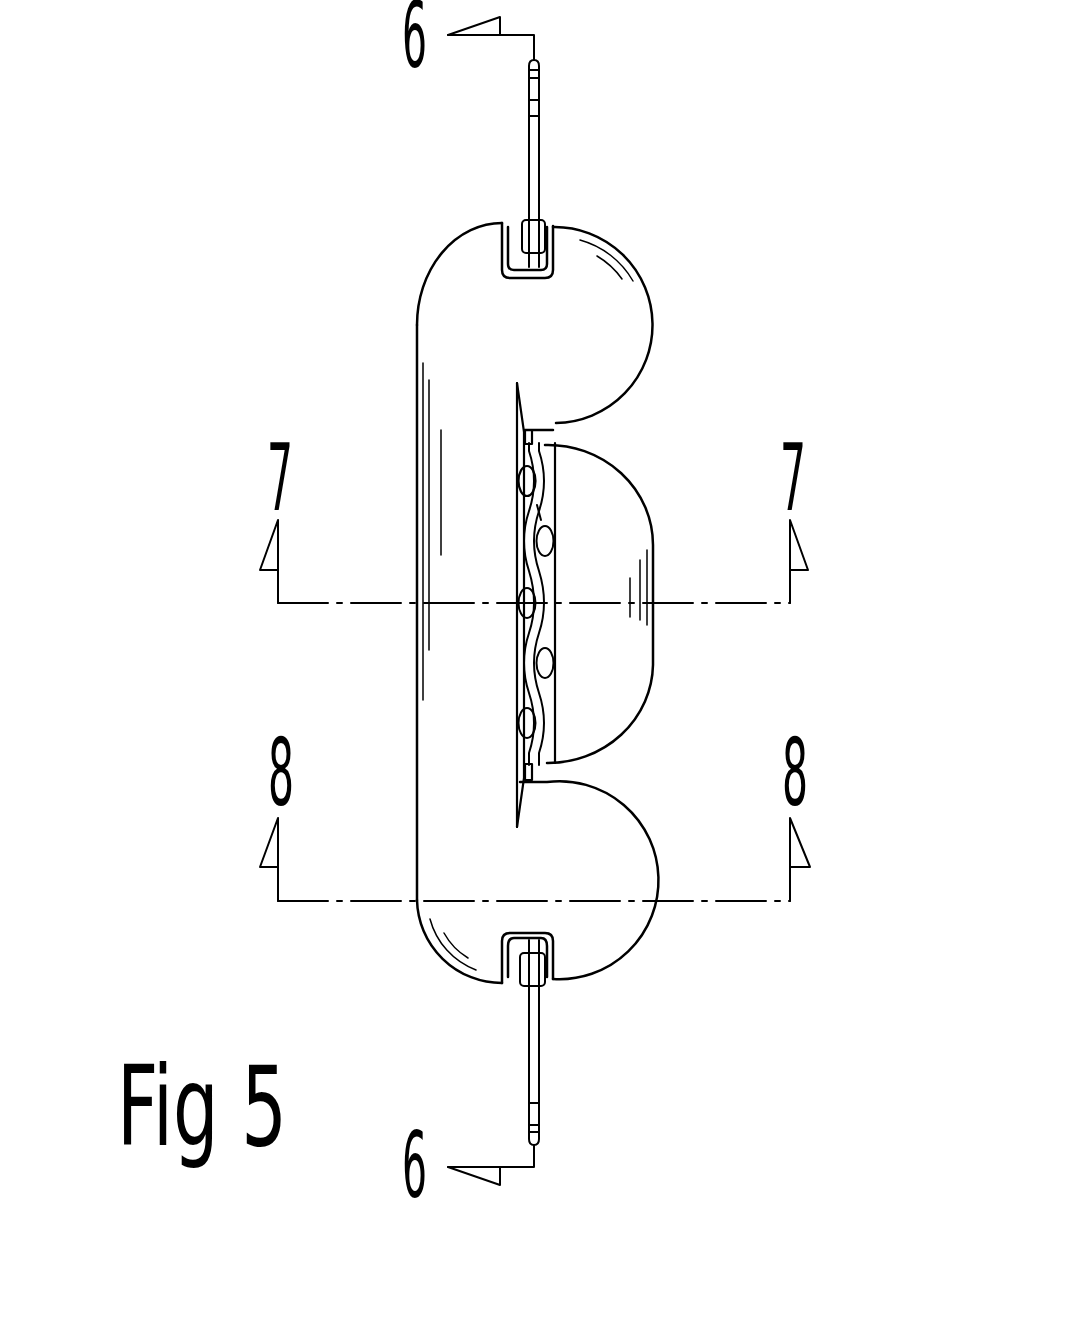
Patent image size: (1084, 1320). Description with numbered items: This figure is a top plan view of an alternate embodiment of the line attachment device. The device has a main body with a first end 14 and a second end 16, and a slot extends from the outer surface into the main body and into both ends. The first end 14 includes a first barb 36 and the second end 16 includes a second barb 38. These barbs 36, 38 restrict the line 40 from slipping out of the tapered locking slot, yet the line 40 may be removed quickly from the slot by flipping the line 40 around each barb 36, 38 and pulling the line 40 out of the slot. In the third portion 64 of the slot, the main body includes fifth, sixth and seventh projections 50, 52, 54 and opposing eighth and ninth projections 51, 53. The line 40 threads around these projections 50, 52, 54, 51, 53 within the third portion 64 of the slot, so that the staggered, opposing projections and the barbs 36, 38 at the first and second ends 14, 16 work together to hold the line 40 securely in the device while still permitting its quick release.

The first end 14 is at (615, 923).
The second end 16 is at (472, 237).
The first barb 36 is at (527, 970).
The second barb 38 is at (530, 235).
The line 40 is at (537, 145).
The fifth projection 50 is at (528, 480).
The eighth projection 51 is at (548, 538).
The sixth projection 52 is at (528, 600).
The ninth projection 53 is at (555, 680).
The seventh projection 54 is at (523, 730).
The third portion of the slot 64 is at (545, 515).